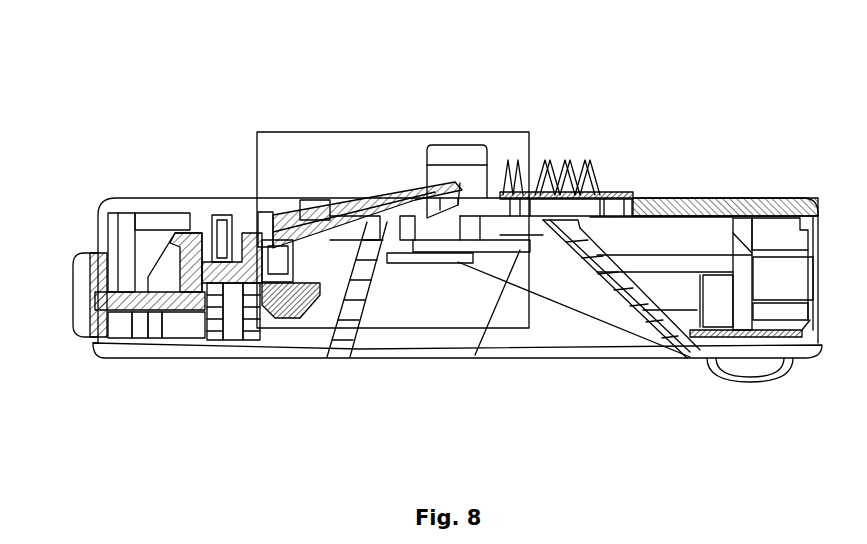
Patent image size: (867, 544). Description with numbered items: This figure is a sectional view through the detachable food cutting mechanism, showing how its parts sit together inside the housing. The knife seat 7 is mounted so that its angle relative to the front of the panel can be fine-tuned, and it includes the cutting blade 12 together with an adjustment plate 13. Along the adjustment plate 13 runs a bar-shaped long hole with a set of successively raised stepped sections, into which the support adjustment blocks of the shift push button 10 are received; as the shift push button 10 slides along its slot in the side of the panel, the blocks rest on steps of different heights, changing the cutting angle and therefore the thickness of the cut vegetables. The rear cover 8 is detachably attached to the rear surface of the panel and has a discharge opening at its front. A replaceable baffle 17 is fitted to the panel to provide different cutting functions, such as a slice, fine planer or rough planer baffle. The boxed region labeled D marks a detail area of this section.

The shift push button 10 is at (90, 262).
The adjustment plate 13 is at (275, 222).
The knife seat 7 is at (313, 222).
The cutting blade 12 is at (390, 198).
The detail region D is at (423, 131).
The baffle 17 is at (710, 198).
The rear cover 8 is at (690, 350).